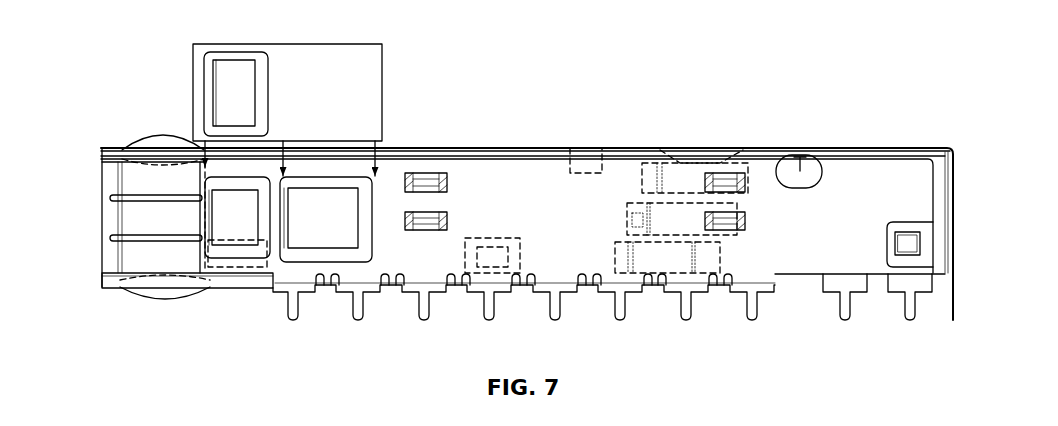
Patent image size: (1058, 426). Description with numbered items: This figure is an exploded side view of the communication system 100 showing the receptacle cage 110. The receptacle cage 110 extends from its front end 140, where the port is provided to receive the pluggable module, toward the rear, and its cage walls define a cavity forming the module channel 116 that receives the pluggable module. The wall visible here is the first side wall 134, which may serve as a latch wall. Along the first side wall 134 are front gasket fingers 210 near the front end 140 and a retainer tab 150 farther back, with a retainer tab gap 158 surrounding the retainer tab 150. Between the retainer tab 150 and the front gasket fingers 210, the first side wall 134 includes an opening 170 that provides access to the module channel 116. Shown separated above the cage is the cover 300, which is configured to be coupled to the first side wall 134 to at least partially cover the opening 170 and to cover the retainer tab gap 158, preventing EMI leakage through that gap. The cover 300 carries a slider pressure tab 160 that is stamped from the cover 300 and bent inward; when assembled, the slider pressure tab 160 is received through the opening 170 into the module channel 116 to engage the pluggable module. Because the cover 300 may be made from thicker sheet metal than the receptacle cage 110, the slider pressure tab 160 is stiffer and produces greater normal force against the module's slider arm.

The communication system 100 is at (690, 100).
The receptacle cage 110 is at (817, 158).
The module channel 116 is at (96, 266).
The first side wall 134 is at (528, 193).
The front end 140 is at (97, 153).
The retainer tab 150 is at (325, 232).
The retainer tab gap 158 is at (366, 190).
The slider pressure tab 160 is at (232, 82).
The opening 170 is at (237, 246).
The front gasket fingers 210 is at (147, 178).
The cover 300 is at (327, 67).